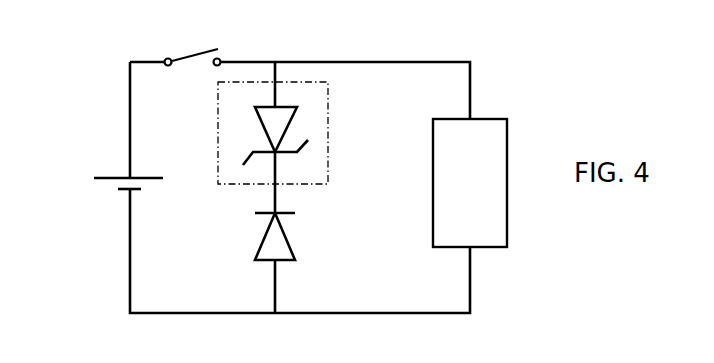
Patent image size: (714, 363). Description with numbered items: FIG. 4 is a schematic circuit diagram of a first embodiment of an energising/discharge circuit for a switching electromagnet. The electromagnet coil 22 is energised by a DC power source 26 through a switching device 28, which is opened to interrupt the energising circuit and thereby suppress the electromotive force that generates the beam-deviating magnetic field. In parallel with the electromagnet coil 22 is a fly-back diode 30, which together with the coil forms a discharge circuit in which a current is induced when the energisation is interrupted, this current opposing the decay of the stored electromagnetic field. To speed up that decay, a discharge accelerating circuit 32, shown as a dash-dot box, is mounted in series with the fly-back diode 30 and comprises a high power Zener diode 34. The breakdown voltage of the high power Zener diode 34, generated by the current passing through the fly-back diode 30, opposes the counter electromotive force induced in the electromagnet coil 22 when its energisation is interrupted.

The electromagnet coil 22 is at (470, 183).
The DC power source 26 is at (108, 176).
The switching device 28 is at (190, 56).
The fly-back diode 30 is at (275, 253).
The discharge accelerating circuit 32 is at (329, 95).
The high power Zener diode 34 is at (272, 130).